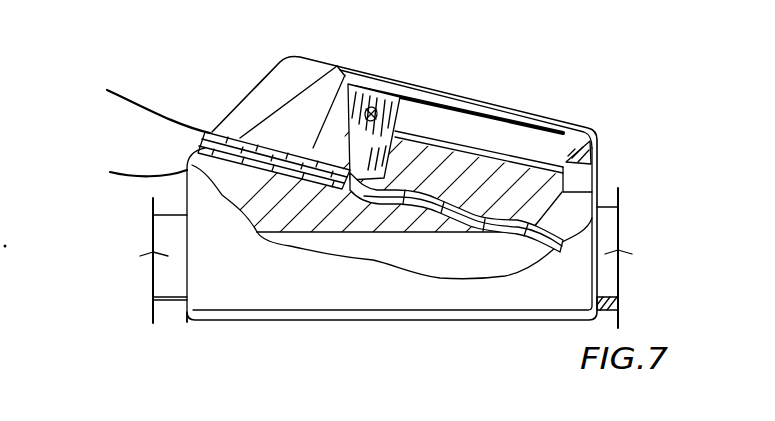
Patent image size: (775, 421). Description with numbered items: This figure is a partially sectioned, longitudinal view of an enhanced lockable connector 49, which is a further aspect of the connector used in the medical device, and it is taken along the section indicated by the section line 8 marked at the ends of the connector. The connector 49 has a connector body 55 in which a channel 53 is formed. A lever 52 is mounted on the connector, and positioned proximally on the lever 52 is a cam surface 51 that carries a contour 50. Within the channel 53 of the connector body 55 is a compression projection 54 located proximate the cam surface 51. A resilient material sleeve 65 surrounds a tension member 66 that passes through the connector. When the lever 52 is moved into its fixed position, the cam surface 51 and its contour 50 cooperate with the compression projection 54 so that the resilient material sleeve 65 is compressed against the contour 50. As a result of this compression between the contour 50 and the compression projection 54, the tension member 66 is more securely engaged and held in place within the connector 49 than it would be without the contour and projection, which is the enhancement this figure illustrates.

The section line 8- 8 is at (637, 130).
The enhanced lockable connector 49 is at (434, 78).
The contour 50 is at (350, 165).
The cam surface 51 is at (388, 116).
The lever 52 is at (482, 108).
The channel 53 is at (347, 72).
The compression projection 54 is at (360, 187).
The connector body 55 is at (268, 70).
The resilient material sleeve 65 is at (129, 160).
The tension member 66 is at (168, 120).